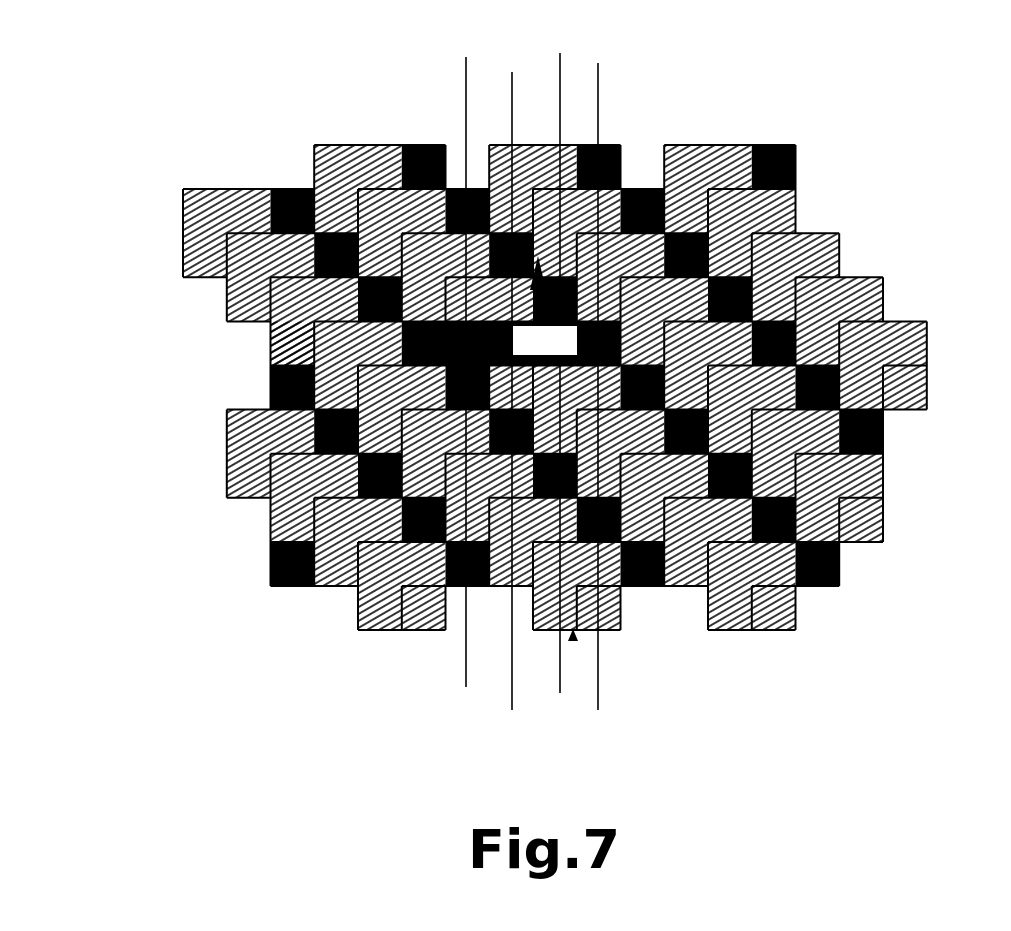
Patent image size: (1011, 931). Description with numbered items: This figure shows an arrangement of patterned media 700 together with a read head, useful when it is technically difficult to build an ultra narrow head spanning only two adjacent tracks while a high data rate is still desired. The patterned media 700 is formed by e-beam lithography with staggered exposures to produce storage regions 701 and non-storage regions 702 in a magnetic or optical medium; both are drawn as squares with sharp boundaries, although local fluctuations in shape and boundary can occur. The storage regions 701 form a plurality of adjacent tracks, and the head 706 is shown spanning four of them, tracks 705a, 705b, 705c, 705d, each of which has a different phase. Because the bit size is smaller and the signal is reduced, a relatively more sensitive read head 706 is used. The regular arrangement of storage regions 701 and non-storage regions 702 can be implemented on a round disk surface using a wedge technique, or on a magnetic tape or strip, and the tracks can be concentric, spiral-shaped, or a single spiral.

The patterned media 700 is at (147, 104).
The storage regions 701 is at (797, 158).
The non-storage regions 702 is at (353, 158).
The track 705a is at (466, 686).
The track 705b is at (512, 708).
The track 705c is at (560, 696).
The track 705d is at (598, 702).
The head 706 is at (315, 353).